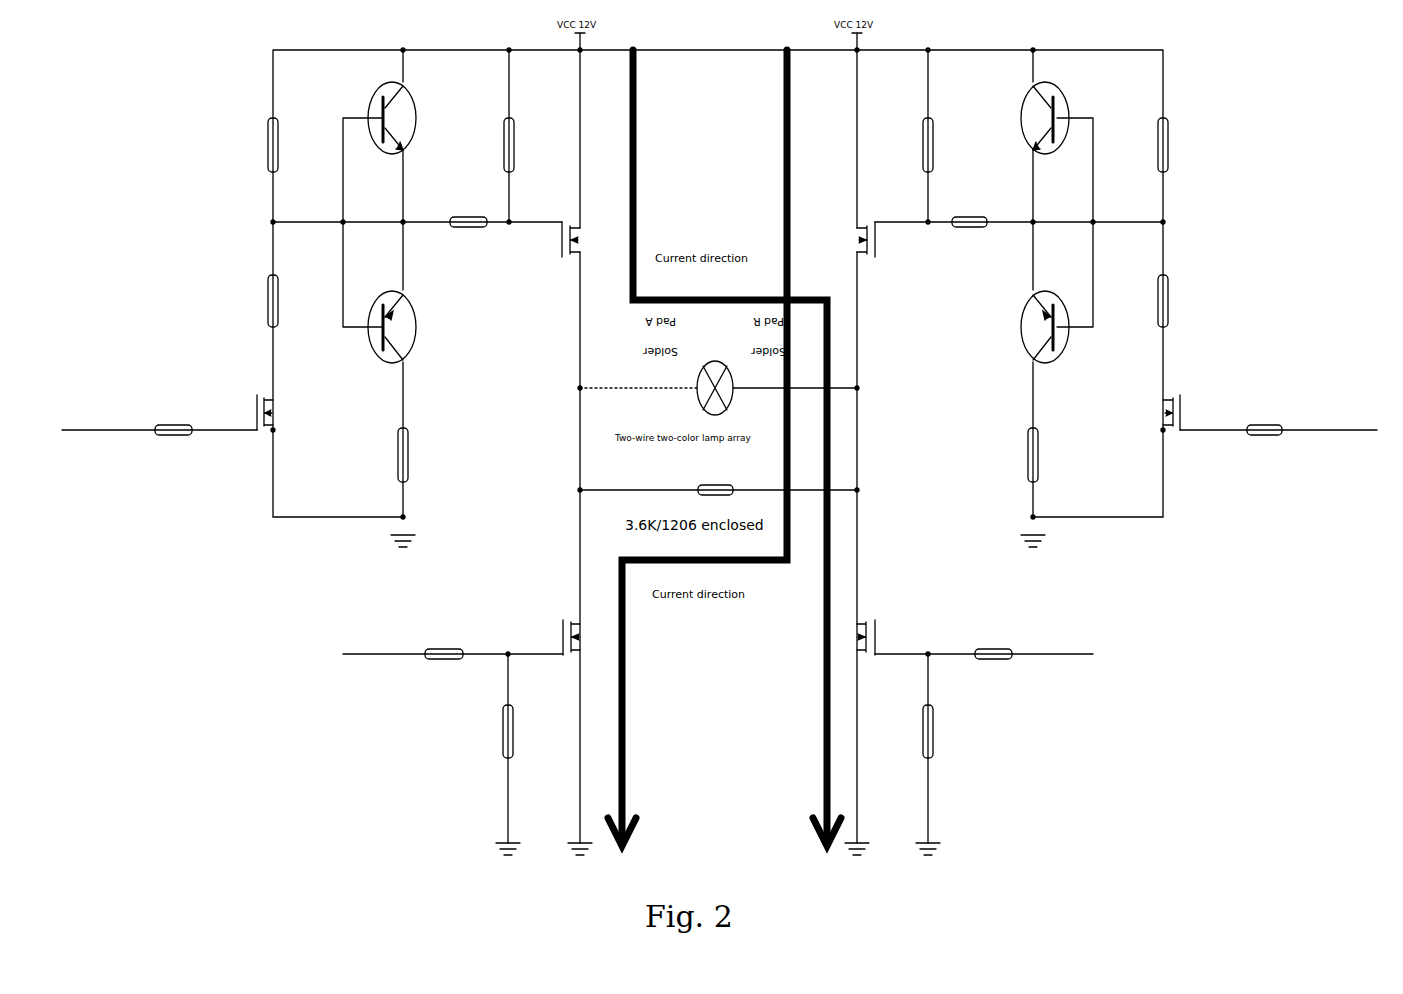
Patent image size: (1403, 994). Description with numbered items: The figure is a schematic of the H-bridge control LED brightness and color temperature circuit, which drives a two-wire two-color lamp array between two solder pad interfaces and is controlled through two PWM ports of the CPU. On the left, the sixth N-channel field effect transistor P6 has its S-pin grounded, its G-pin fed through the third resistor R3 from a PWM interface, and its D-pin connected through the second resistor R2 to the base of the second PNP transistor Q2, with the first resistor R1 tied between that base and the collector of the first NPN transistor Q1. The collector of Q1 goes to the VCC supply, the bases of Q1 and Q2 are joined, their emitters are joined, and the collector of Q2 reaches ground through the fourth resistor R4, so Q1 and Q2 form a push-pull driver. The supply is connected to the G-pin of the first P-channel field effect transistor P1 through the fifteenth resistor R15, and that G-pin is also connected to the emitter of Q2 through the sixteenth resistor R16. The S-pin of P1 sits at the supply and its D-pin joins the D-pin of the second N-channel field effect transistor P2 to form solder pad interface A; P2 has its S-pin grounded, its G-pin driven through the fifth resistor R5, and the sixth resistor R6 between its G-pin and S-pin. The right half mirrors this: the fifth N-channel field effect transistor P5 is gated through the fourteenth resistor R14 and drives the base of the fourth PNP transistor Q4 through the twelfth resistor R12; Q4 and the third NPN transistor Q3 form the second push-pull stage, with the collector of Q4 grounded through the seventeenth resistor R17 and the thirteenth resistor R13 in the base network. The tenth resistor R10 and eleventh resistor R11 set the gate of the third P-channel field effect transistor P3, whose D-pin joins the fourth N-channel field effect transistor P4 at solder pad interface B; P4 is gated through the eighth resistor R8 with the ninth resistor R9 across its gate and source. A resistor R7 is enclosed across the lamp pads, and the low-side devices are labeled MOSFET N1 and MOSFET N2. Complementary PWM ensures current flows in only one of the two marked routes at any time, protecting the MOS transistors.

The first resistor R1 is at (286, 145).
The second resistor R2 is at (286, 301).
The third resistor R3 is at (159, 431).
The fourth resistor R4 is at (418, 455).
The fifth resistor R5 is at (453, 654).
The sixth resistor R6 is at (520, 748).
The resistor 3.6K/1206 enclosed R7 is at (715, 480).
The eighth resistor R8 is at (984, 654).
The ninth resistor R9 is at (940, 748).
The tenth resistor R10 is at (940, 145).
The eleventh resistor R11 is at (969, 222).
The twelfth resistor R12 is at (1176, 145).
The resistor 4.7K R13 is at (1176, 301).
The fourteenth resistor R14 is at (1278, 430).
The fifteenth resistor R15 is at (521, 145).
The sixteenth resistor R16 is at (468, 222).
The seventeenth resistor R17 is at (1048, 455).
The first NPN transistor Q1 is at (405, 118).
The second PNP transistor Q2 is at (405, 327).
The third NPN transistor Q3 is at (1052, 131).
The fourth PNP transistor Q4 is at (1056, 326).
The first P-channel field effect transistor P1 is at (549, 241).
The second N-channel field effect transistor P2 is at (568, 622).
The third P-channel field effect transistor P3 is at (892, 241).
The fourth N-channel field effect transistor P4 is at (883, 637).
The fifth N-channel field effect transistor P5 is at (1182, 427).
The sixth N-channel field effect transistor P6 is at (280, 412).
The MOSFET N1 is at (876, 661).
The MOSFET N2 is at (550, 641).